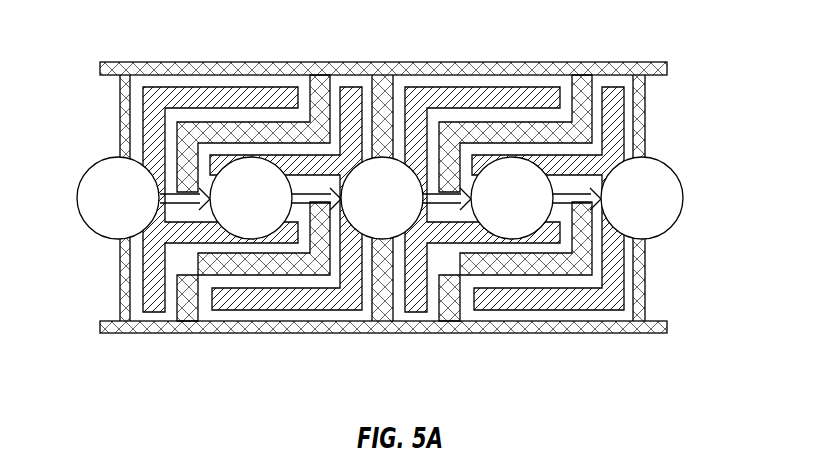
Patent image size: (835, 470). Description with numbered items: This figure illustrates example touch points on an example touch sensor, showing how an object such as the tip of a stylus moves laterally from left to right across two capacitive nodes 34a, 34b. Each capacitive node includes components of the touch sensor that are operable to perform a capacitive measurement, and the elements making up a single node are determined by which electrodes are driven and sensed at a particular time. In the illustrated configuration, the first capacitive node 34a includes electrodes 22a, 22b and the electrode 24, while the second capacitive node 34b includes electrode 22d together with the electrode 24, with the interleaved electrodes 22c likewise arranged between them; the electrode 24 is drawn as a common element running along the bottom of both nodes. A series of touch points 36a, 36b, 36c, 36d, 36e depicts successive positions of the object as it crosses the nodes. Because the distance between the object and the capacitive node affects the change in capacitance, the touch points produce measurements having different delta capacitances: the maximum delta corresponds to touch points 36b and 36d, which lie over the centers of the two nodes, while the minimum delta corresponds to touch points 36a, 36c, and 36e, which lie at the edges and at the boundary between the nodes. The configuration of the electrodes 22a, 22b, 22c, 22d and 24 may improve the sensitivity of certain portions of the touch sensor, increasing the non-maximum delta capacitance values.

The electrode 22a is at (153, 302).
The electrode 22b is at (238, 300).
The electrode 22c is at (418, 300).
The electrode 22d is at (532, 300).
The electrode 24 is at (640, 333).
The capacitive node 34a is at (378, 57).
The capacitive node 34b is at (378, 57).
The touch point 36a is at (104, 226).
The touch point 36b is at (255, 223).
The touch point 36c is at (378, 222).
The touch point 36d is at (537, 222).
The touch point 36e is at (680, 200).